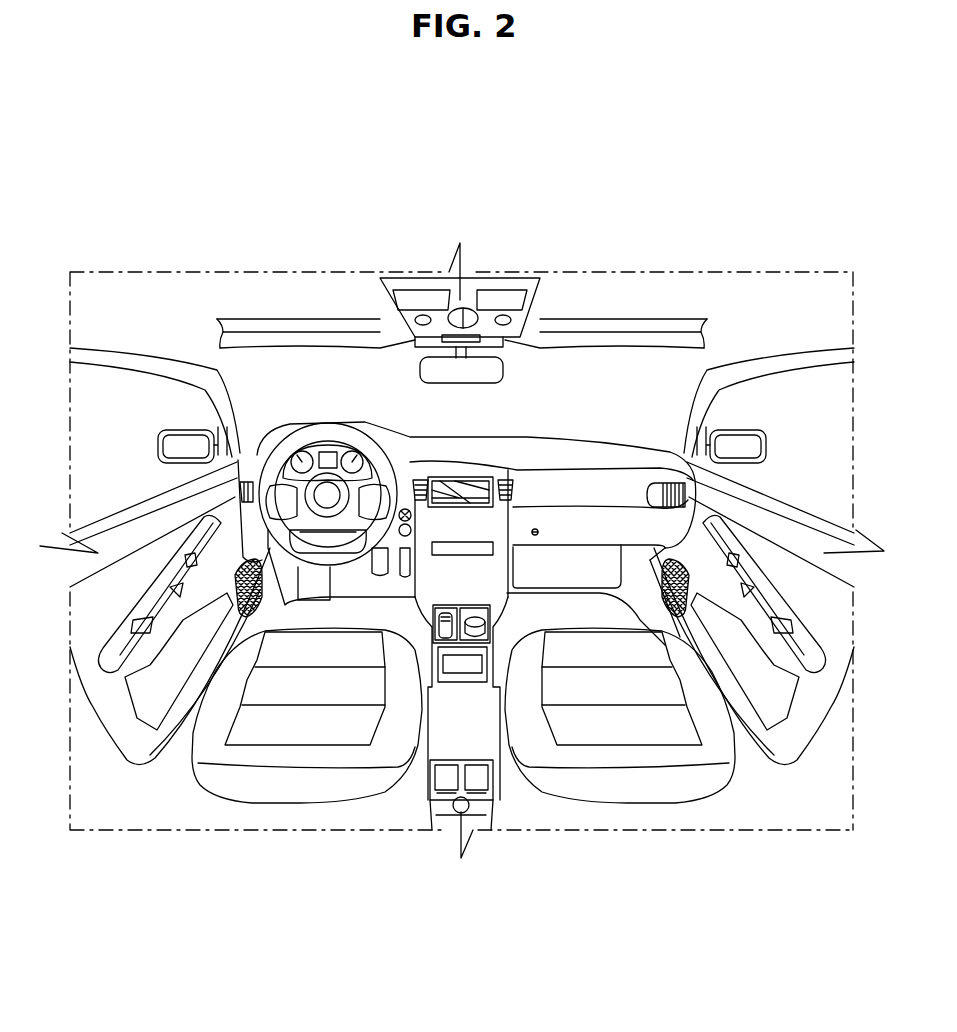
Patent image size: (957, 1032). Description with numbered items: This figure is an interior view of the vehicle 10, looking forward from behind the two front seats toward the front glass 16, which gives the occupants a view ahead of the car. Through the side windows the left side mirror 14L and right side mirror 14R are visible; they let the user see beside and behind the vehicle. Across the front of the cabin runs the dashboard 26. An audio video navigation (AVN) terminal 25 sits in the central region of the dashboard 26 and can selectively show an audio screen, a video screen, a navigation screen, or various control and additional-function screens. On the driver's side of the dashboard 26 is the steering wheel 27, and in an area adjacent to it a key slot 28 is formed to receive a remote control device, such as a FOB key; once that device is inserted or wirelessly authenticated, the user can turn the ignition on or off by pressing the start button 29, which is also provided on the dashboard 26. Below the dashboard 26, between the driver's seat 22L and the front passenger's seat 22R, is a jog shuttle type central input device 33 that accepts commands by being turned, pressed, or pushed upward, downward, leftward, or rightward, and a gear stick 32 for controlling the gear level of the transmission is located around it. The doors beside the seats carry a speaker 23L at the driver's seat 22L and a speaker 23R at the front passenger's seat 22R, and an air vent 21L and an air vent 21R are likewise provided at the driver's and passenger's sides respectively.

The vehicle 10 is at (296, 253).
The front glass 16 is at (573, 358).
The left side mirror 14L is at (177, 442).
The right side mirror 14R is at (745, 442).
The air vent 21L is at (227, 490).
The air vent 21R is at (697, 490).
The speaker 23L is at (240, 592).
The speaker 23R is at (684, 592).
The audio video navigation (AVN) terminal 25 is at (457, 480).
The dashboard 26 is at (612, 453).
The steering wheel 27 is at (287, 442).
The key slot 28 is at (410, 440).
The start button 29 is at (398, 537).
The gear stick 32 is at (440, 623).
The central input device 33 is at (500, 620).
The driver's seat 22L is at (287, 782).
The front passenger's seat 22R is at (627, 782).